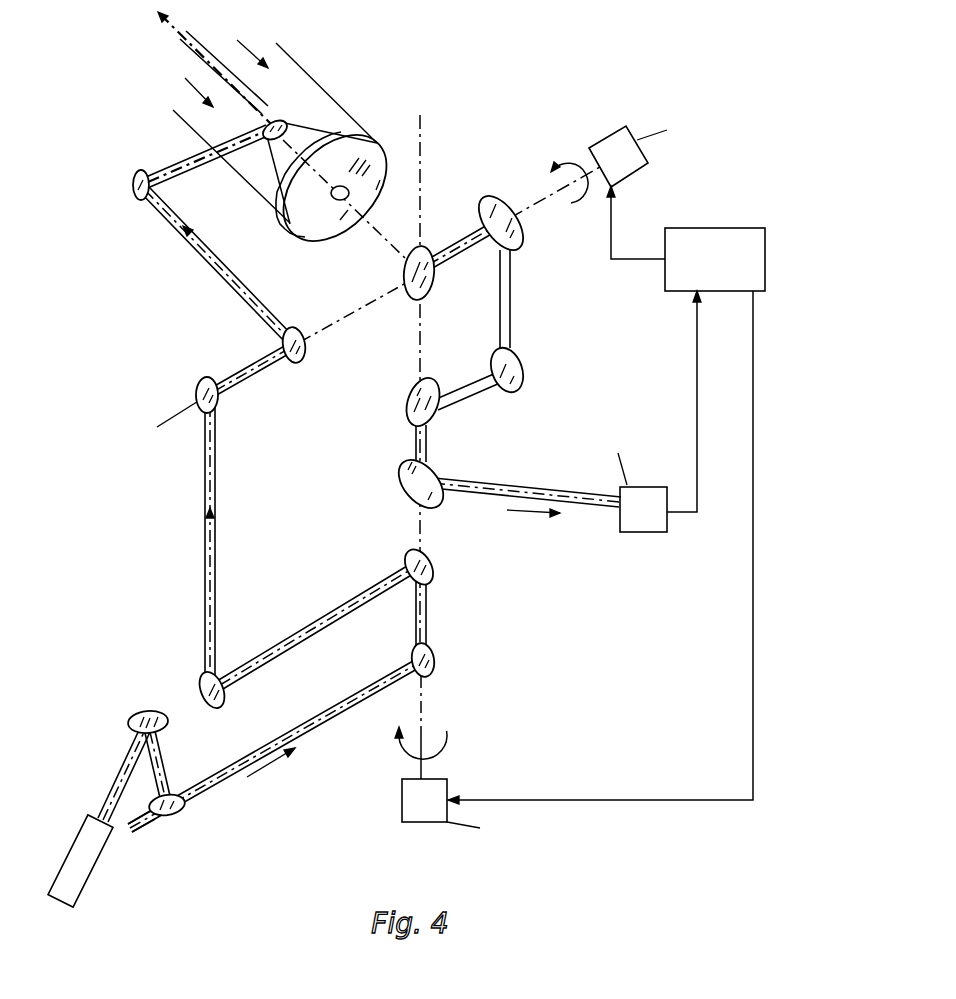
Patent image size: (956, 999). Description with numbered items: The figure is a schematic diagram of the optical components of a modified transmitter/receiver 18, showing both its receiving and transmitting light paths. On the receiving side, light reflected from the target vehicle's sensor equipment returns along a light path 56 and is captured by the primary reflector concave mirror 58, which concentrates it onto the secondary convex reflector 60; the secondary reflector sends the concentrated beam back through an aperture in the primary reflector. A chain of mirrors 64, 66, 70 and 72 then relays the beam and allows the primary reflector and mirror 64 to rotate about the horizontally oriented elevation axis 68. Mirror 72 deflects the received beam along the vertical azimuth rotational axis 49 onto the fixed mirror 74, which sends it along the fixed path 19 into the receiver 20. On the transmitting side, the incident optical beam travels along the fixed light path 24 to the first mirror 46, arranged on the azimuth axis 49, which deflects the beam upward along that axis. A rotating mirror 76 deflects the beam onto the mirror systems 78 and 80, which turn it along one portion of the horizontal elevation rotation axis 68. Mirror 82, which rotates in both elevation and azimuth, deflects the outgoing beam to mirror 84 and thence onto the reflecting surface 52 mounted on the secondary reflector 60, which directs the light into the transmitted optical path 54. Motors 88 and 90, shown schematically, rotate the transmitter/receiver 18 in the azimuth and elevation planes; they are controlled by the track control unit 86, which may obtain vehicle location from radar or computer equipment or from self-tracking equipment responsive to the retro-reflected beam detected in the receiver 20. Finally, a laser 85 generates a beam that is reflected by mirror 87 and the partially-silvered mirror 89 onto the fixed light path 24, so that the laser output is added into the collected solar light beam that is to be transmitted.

The transmitter/receiver 18 is at (79, 480).
The fixed path 19 is at (582, 508).
The receiver 20 is at (665, 527).
The fixed light path 24 is at (143, 827).
The first mirror 46 is at (437, 650).
The vertical azimuth rotational axis 49 is at (423, 720).
The reflecting surface 52 is at (263, 117).
The transmitted optical path 54 is at (200, 42).
The light path 56 is at (277, 43).
The primary reflector concave mirror 58 is at (373, 143).
The secondary convex reflector 60 is at (283, 118).
The mirror 64 is at (410, 305).
The mirror 66 is at (492, 192).
The horizontal elevation axis 68 is at (542, 202).
The mirror 70 is at (525, 365).
The mirror 72 is at (407, 393).
The fixed mirror 74 is at (400, 467).
The rotating mirror 76 is at (408, 555).
The mirror system 78 is at (205, 673).
The mirror system 80 is at (205, 388).
The mirror 82 is at (287, 342).
The mirror 84 is at (137, 200).
The laser 85 is at (85, 822).
The track control unit 86 is at (665, 285).
The mirror 87 is at (138, 712).
The motor 88 is at (610, 125).
The partially-silvered mirror 89 is at (183, 807).
The motor 90 is at (402, 800).